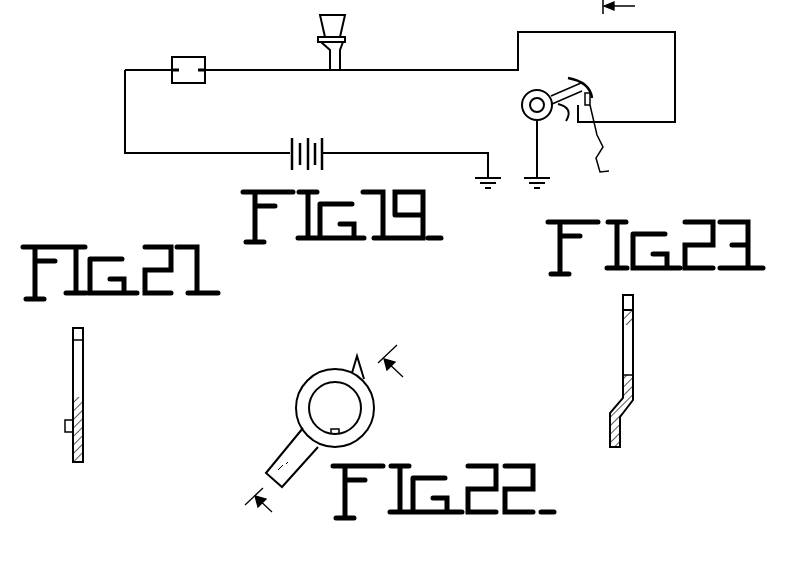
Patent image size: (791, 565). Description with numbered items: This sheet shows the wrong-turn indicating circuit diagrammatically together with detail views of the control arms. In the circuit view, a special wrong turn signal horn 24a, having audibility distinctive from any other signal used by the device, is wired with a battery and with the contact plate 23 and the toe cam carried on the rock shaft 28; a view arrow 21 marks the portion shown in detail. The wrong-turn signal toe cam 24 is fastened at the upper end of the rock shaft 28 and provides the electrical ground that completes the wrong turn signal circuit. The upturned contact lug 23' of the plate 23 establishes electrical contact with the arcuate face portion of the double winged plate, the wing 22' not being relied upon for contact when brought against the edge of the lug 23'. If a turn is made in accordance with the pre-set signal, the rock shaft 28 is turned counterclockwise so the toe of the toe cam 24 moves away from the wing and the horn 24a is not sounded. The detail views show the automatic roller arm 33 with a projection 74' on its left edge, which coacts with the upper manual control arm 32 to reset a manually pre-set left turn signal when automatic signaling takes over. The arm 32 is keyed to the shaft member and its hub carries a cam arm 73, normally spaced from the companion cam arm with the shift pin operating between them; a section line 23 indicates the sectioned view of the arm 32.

In FIG. 19, the view direction arrow (switch unit) 21 is at (620, 16).
In FIG. 19, the wrong turn signal horn 24a is at (341, 33).
In FIG. 19, the rock shaft 28 is at (536, 104).
In FIG. 19, the wing 22' is at (578, 74).
In FIG. 19, the upturned contact lug 23' is at (615, 99).
In FIG. 19, the wrong-turn signal toe cam 24 is at (564, 125).
In FIG. 21, the automatic roller arm 33 is at (83, 408).
In FIG. 21, the projection 74' is at (49, 440).
In FIG. 22, the upper manual control arm 32 is at (371, 414).
In FIG. 23, the upper manual control arm 32 is at (633, 389).
In FIG. 22, the cam arm 73 is at (362, 358).
In FIG. 23, the cam arm 73 is at (633, 301).
In FIG. 22, the plate 23 is at (333, 445).